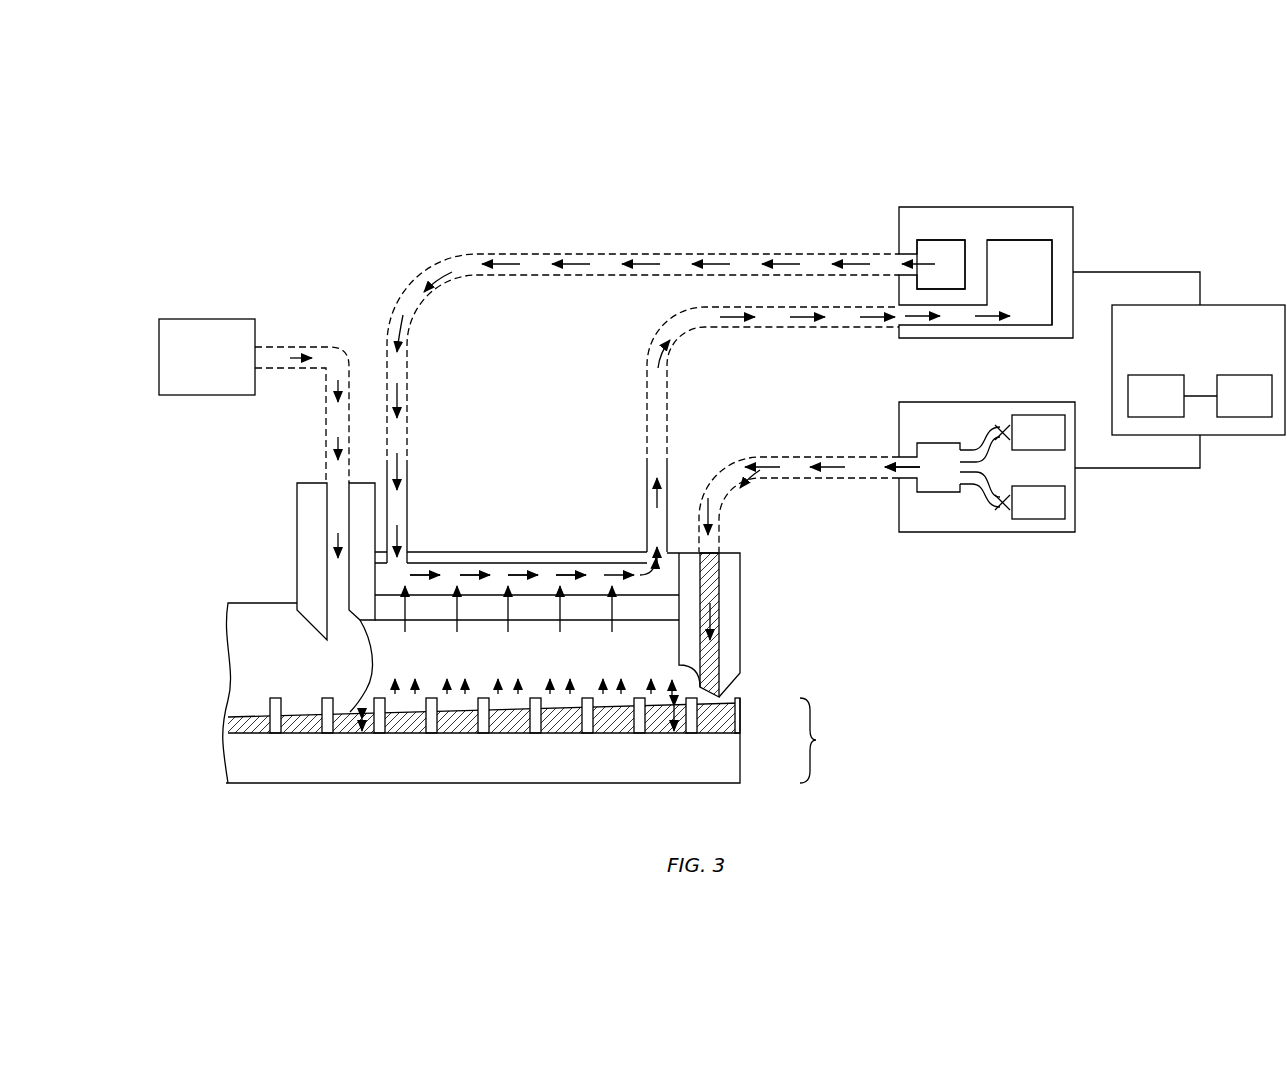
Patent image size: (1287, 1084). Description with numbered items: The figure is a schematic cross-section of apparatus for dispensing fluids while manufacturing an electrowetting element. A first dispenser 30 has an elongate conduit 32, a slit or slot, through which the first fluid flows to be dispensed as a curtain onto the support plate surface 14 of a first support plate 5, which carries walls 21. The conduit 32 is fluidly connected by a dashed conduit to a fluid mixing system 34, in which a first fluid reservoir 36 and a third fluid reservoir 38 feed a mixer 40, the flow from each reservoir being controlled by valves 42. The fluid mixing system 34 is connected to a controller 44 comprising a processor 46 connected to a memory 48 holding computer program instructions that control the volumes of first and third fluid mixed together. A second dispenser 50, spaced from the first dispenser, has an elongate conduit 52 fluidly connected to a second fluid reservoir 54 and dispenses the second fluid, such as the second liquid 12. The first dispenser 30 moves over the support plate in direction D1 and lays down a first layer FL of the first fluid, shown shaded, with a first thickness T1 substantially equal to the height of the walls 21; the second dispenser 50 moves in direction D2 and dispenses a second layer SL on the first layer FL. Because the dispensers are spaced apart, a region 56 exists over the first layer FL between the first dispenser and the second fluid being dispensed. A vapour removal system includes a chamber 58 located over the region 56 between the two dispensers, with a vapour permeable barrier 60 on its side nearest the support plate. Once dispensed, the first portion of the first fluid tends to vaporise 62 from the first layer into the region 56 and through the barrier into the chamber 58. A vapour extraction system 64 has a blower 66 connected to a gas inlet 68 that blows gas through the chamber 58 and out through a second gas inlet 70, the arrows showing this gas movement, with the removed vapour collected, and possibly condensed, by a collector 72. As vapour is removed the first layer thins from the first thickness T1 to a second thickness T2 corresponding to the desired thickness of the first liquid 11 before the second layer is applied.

The first support plate 5 is at (817, 740).
The first liquid 11 is at (518, 735).
The second liquid 12 is at (342, 666).
The support plate surface 14 is at (592, 733).
The walls 21 is at (740, 718).
The first dispenser 30 is at (740, 637).
The conduit 32 is at (740, 573).
The fluid mixing system 34 is at (920, 532).
The first fluid reservoir 36 is at (1042, 519).
The third fluid reservoir 38 is at (1042, 415).
The mixer 40 is at (940, 443).
The valves 42 is at (1002, 428).
The controller 44 is at (1262, 305).
The processor 46 is at (1244, 396).
The memory 48 is at (1172, 396).
The second dispenser 50 is at (307, 578).
The elongate conduit 52 is at (327, 505).
The second fluid reservoir 54 is at (176, 319).
The region 56 is at (533, 669).
The chamber 58 is at (519, 566).
The barrier 60 is at (432, 612).
The vaporise 62 is at (572, 672).
The vapour extraction system 64 is at (1073, 215).
The blower 66 is at (940, 240).
The gas inlet 68 is at (408, 479).
The gas inlet 70 is at (647, 479).
The collector 72 is at (1030, 240).
The direction D1 is at (748, 603).
The direction D2 is at (283, 543).
The first layer FL is at (707, 688).
The second layer SL is at (242, 652).
The first thickness T1 is at (680, 718).
The second thickness T2 is at (360, 735).